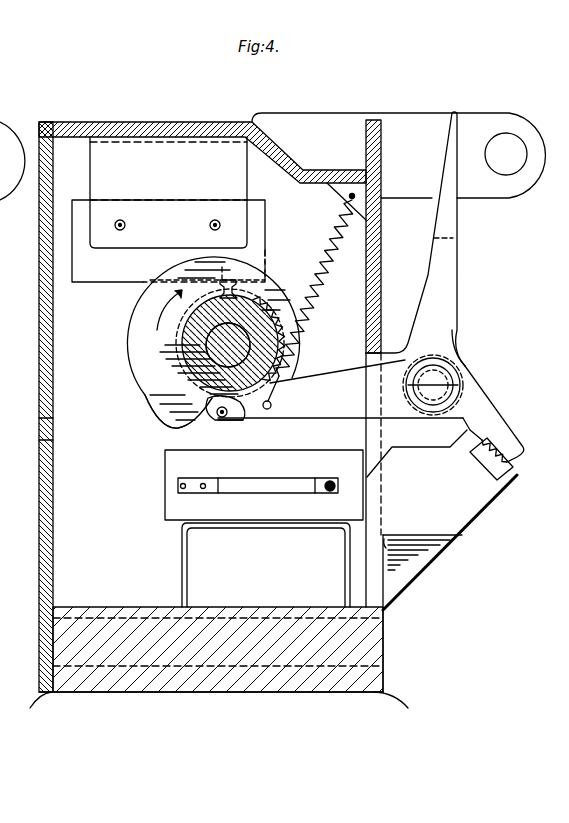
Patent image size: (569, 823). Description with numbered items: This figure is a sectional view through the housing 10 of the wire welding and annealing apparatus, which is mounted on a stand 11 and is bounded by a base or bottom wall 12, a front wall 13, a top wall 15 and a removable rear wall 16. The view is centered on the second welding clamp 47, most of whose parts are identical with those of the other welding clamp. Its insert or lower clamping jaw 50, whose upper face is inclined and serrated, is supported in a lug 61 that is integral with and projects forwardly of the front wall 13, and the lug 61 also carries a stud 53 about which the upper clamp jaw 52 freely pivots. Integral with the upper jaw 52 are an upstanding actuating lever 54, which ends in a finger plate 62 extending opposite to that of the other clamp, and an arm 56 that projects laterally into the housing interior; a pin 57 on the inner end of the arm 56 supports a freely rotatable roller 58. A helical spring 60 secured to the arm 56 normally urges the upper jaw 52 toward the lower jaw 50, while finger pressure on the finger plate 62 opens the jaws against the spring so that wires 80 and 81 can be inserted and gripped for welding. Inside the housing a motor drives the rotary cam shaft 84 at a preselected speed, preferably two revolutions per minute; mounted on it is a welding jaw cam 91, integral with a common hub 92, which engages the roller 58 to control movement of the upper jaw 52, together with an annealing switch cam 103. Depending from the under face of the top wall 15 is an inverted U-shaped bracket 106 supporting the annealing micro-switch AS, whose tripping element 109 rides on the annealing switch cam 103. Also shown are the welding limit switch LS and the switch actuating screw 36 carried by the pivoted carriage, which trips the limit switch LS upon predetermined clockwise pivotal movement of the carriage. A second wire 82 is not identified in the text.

The housing 10 is at (220, 397).
The stand 11 is at (405, 698).
The base or bottom wall 12 is at (368, 632).
The front wall 13 is at (374, 229).
The top wall 15 is at (163, 122).
The removable rear wall 16 is at (45, 327).
The switch actuating screw 36 is at (316, 495).
The welding clamp 47 is at (456, 337).
The insert or lower clamping jaw 50 is at (487, 458).
The upper clamp jaw 52 is at (497, 425).
The stud 53 is at (450, 373).
The actuating lever 54 is at (447, 266).
The arm 56 is at (325, 405).
The pin 57 is at (217, 421).
The roller 58 is at (230, 424).
The helical spring 60 is at (317, 258).
The lug 61 is at (472, 510).
The finger plate 62 is at (448, 158).
The steel wire 80 is at (0, 458).
The steel wire 81 is at (505, 449).
The lead 82 is at (26, 413).
The rotary cam shaft 84 is at (210, 346).
The welding jaw cam 91 is at (150, 381).
The common hub 92 is at (192, 373).
The annealing switch cam 103 is at (178, 323).
The inverted U-shaped bracket 106 is at (98, 175).
The tripping element 109 is at (240, 276).
The annealing micro-switch AS is at (85, 272).
The welding limit switch LS is at (262, 484).